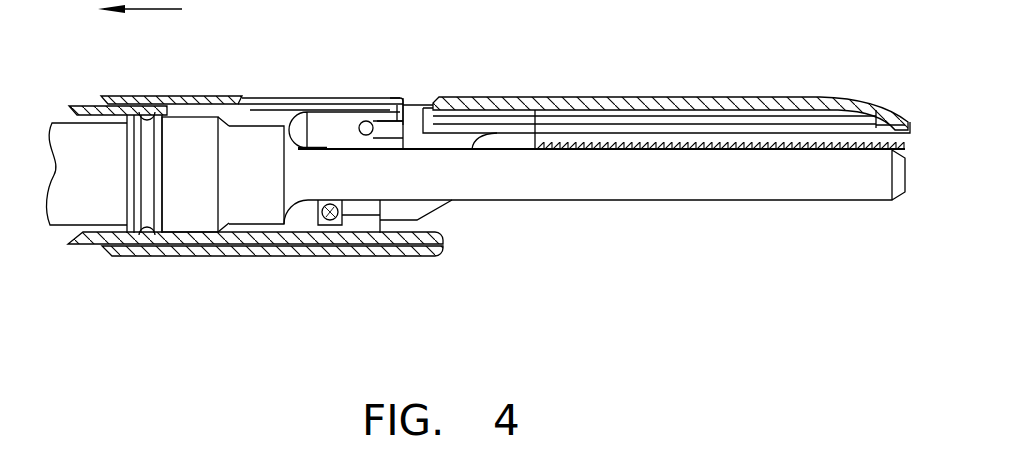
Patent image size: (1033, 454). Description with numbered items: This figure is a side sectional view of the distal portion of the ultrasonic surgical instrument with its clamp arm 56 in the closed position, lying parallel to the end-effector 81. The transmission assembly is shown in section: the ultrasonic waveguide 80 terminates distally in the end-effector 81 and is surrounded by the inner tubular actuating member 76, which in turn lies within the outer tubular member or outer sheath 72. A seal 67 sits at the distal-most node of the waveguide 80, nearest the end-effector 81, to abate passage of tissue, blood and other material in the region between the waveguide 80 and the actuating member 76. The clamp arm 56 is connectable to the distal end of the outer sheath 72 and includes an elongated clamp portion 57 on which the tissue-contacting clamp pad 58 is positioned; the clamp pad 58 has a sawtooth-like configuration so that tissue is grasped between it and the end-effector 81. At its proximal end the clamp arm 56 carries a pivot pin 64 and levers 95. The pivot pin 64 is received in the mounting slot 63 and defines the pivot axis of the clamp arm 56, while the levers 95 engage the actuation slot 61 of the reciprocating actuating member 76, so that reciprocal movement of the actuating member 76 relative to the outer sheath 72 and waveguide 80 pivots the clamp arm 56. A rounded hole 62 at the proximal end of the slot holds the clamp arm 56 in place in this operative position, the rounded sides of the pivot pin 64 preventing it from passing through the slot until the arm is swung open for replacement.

The clamp arm 56 is at (666, 103).
The elongated clamp portion 57 is at (683, 103).
The clamp pad 58 is at (799, 143).
The actuation slot 61 is at (316, 206).
The rounded hole 62 is at (371, 134).
The mounting slot 63 is at (390, 152).
The pivot pin 64 is at (370, 122).
The seal 67 is at (189, 168).
The outer sheath 72 is at (195, 96).
The actuating member 76 is at (81, 243).
The waveguide 80 is at (102, 189).
The end-effector 81 is at (622, 184).
The levers 95 is at (334, 216).